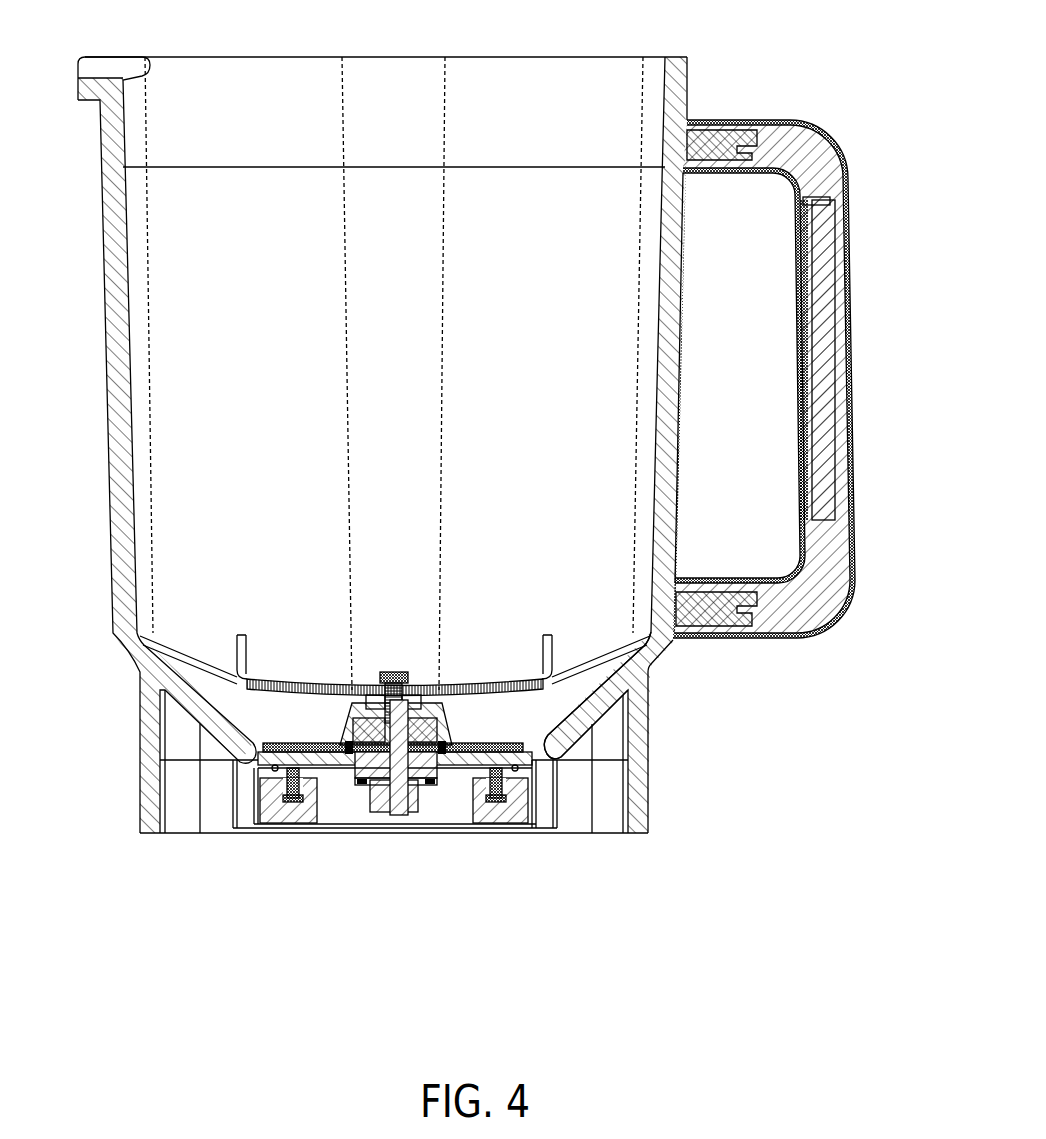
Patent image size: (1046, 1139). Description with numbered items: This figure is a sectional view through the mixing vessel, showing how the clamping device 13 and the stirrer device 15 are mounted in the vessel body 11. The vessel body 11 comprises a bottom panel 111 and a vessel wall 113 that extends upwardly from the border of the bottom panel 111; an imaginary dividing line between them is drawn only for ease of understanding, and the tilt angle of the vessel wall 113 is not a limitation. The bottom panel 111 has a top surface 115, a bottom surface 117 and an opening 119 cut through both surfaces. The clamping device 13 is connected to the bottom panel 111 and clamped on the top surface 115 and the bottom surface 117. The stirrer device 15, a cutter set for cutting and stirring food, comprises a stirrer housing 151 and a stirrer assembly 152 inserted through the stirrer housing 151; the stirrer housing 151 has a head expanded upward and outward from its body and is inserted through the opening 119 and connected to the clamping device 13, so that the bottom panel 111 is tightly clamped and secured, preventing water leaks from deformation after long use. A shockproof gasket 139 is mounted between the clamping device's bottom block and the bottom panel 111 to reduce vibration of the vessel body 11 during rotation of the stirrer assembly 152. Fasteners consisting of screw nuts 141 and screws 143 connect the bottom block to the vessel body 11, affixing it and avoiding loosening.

The vessel body 11 is at (687, 92).
The clamping device 13 is at (303, 790).
The stirrer device 15 is at (372, 670).
The bottom panel 111 is at (535, 762).
The vessel wall 113 is at (534, 742).
The top surface 115 is at (582, 700).
The bottom surface 117 is at (520, 790).
The opening 119 is at (448, 752).
The shockproof gasket 139 is at (263, 746).
The screw nut 141 is at (262, 778).
The screw 143 is at (297, 800).
The stirrer housing 151 is at (352, 721).
The stirrer assembly 152 is at (395, 832).